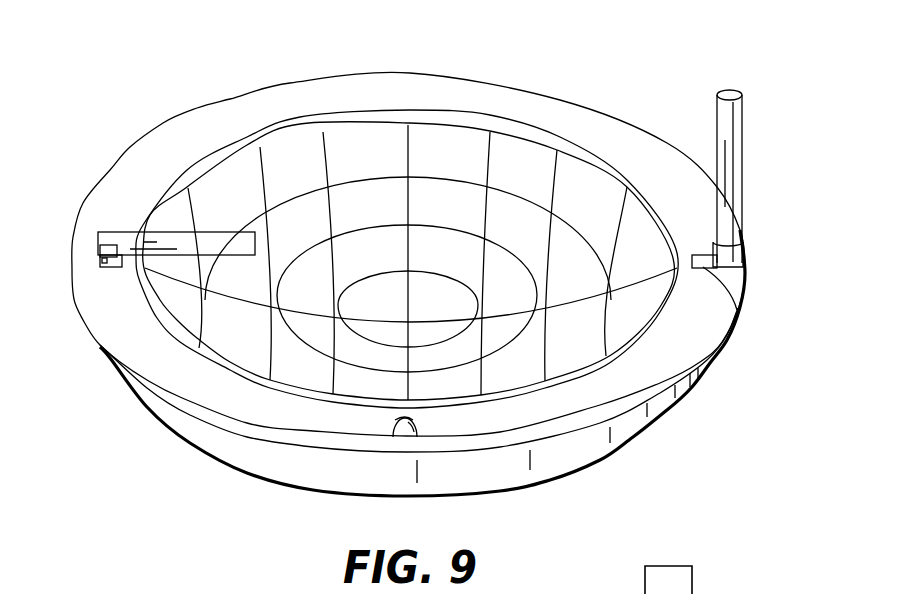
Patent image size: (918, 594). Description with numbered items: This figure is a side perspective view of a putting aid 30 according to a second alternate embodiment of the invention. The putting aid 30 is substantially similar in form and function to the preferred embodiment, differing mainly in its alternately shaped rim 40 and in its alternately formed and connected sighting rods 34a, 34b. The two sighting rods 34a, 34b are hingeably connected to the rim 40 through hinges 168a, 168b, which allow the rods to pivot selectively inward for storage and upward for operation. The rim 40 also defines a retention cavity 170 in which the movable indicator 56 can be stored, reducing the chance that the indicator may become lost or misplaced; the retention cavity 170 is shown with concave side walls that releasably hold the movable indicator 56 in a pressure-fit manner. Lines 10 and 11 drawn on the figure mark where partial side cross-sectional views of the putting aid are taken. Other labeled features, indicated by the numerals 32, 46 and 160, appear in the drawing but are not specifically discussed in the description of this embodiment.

The putting aid 30 is at (493, 52).
The outer rim edge 32 is at (287, 82).
The rim 40 is at (560, 107).
The bowl interior surface 46 is at (138, 272).
The side wall band with slots 160 is at (745, 312).
The sighting rod 34a is at (122, 232).
The sighting rod 34b is at (743, 115).
The hinge 168a is at (105, 267).
The hinge 168b is at (745, 311).
The retention cavity 170 is at (420, 420).
The movable indicator 56 is at (400, 413).
The section line 10 is at (570, 300).
The section line 11 is at (405, 418).